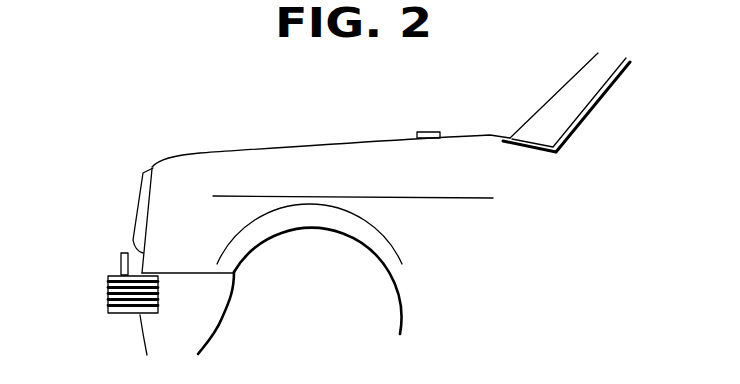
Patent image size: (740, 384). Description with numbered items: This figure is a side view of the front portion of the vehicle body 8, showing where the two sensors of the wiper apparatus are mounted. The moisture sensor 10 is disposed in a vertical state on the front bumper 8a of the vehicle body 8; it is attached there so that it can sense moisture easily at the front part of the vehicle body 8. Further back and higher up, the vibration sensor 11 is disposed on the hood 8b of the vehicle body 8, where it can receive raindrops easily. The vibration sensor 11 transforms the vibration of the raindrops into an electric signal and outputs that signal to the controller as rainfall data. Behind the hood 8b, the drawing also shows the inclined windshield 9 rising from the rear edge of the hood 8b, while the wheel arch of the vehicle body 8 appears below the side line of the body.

The vehicle body 8 is at (157, 168).
The front bumper 8a is at (108, 288).
The hood 8b is at (333, 142).
The windshield 9 is at (550, 100).
The moisture sensor 10 is at (118, 255).
The vibration sensor 11 is at (425, 132).